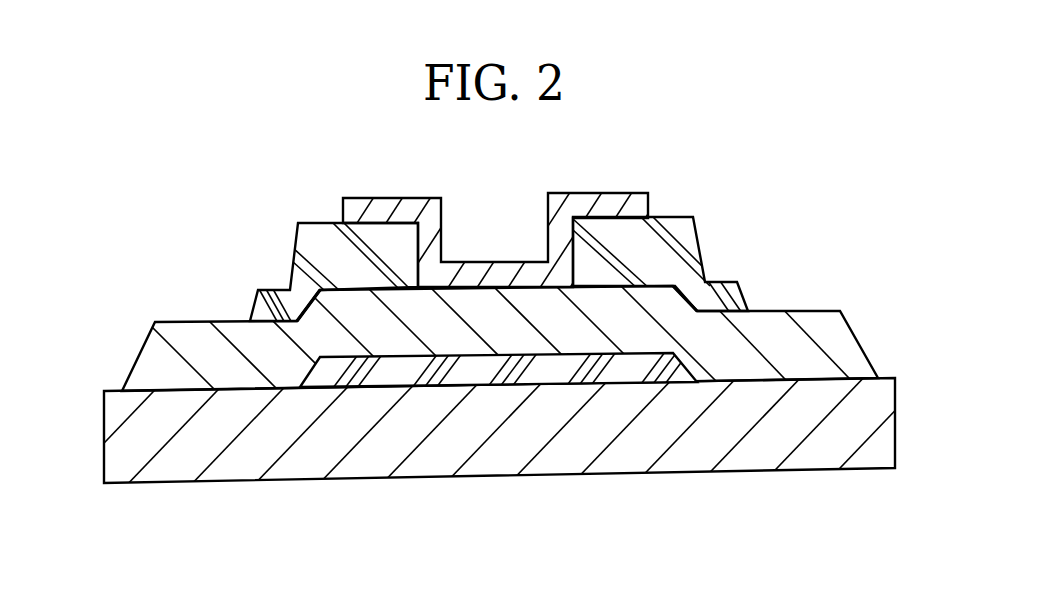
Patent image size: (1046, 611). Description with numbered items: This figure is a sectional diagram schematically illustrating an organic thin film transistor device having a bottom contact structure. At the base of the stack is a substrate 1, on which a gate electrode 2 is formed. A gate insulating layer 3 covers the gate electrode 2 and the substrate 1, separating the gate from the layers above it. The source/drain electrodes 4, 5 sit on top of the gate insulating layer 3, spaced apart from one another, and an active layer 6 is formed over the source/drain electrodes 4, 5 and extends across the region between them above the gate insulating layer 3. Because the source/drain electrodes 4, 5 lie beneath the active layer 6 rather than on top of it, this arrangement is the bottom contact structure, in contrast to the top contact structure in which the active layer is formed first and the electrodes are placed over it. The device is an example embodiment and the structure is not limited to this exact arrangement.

The substrate 1 is at (700, 457).
The gate electrode 2 is at (380, 375).
The gate insulating layer 3 is at (811, 323).
The source electrode 4 is at (307, 240).
The drain electrode 5 is at (688, 238).
The active layer 6 is at (590, 200).